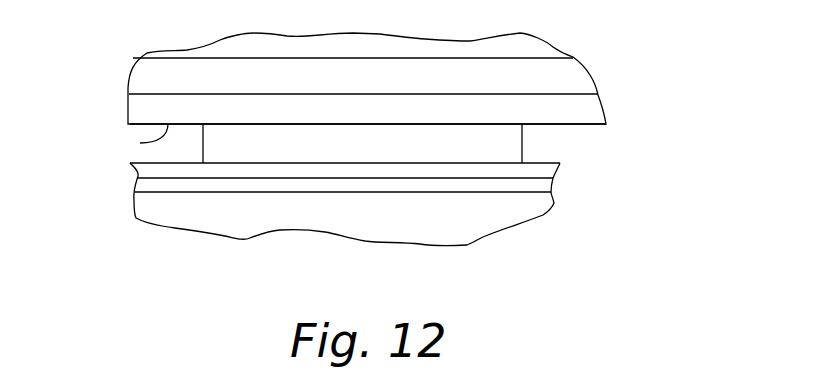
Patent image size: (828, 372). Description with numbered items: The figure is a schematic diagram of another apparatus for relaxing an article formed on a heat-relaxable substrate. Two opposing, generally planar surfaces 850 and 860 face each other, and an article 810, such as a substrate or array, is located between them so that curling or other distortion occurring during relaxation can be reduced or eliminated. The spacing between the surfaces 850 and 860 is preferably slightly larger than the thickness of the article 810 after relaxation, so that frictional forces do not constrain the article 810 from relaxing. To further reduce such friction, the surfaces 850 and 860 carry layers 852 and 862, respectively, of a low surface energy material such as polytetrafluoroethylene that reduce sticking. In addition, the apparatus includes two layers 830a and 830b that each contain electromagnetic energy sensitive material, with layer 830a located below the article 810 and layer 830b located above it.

The layer 830a is at (147, 187).
The layer 830b is at (587, 72).
The article 810 is at (328, 153).
The planar surface 850 is at (535, 162).
The layer 852 is at (547, 170).
The planar surface 860 is at (140, 143).
The layer 862 is at (597, 113).